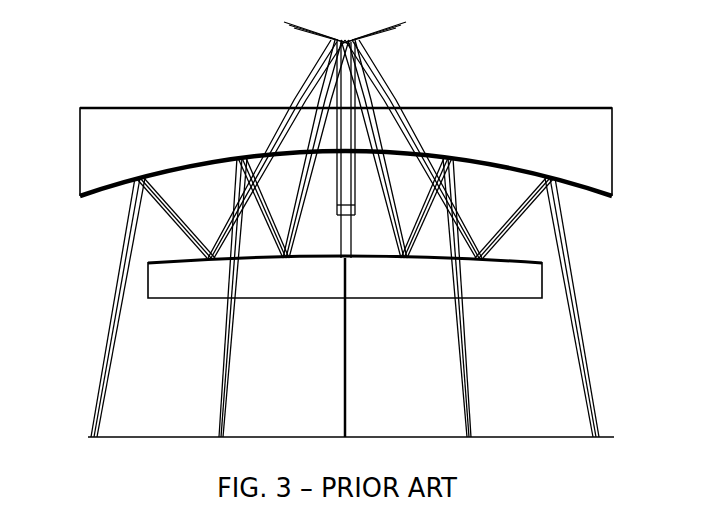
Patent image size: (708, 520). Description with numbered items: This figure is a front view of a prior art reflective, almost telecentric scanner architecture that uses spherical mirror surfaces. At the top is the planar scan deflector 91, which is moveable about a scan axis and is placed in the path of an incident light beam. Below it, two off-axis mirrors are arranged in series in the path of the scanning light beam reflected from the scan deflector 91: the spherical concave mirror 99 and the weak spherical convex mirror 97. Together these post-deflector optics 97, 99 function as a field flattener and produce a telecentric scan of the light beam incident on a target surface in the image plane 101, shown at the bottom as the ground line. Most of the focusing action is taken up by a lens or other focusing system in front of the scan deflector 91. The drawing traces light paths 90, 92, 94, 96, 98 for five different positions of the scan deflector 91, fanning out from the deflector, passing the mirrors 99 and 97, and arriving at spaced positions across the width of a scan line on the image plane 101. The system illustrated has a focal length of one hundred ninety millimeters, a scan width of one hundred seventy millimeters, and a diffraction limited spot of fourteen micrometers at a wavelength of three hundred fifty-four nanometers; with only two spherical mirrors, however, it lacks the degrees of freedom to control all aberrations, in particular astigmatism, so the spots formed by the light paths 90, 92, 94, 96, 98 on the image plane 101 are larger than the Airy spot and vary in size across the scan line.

The planar scan deflector 91 is at (244, 31).
The spherical concave mirror 99 is at (62, 172).
The weak spherical convex mirror 97 is at (124, 286).
The light path 90 is at (126, 374).
The light path 92 is at (248, 373).
The light path 94 is at (356, 371).
The light path 96 is at (491, 361).
The light path 98 is at (591, 344).
The image plane 101 is at (611, 425).